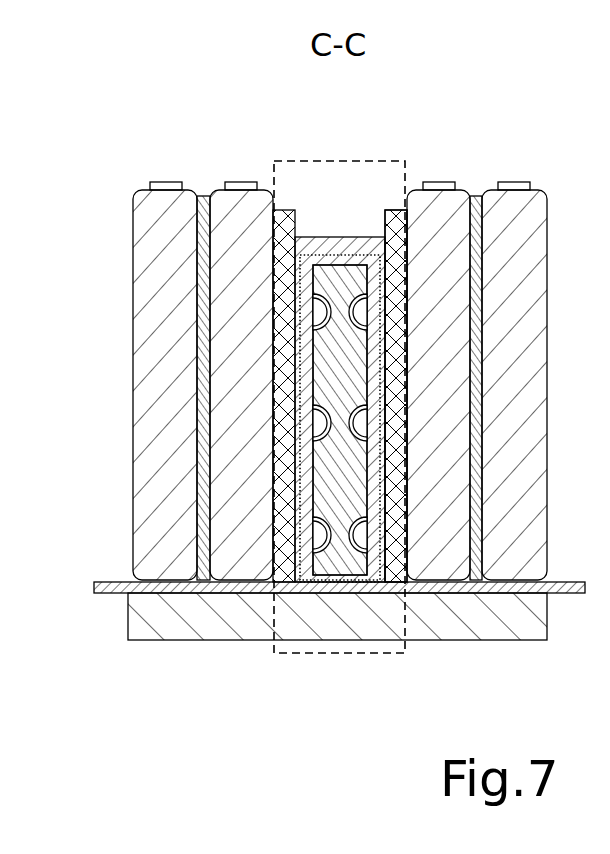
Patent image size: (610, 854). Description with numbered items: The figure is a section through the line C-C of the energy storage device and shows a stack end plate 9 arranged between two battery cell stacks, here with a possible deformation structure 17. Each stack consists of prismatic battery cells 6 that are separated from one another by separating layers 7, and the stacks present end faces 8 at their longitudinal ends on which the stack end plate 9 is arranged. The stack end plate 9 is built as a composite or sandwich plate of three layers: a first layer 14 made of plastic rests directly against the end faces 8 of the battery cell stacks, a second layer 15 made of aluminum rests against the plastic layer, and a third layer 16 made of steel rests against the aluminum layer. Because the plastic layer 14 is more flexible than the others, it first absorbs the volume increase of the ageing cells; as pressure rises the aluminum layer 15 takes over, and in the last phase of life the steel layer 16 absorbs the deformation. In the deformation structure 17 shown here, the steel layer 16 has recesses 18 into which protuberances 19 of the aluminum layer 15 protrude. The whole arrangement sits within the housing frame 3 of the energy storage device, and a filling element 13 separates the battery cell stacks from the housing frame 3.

The housing frame 3 is at (228, 625).
The battery cell 6 is at (133, 373).
The separating layer 7 is at (204, 195).
The end face 8 is at (261, 438).
The stack end plate 9 is at (338, 161).
The filling element 13 is at (113, 592).
The first layer 14 is at (417, 229).
The second layer 15 is at (385, 250).
The third layer 16 is at (439, 324).
The deformation structure 17 is at (350, 598).
The recess 18 is at (457, 420).
The protuberance 19 is at (370, 425).